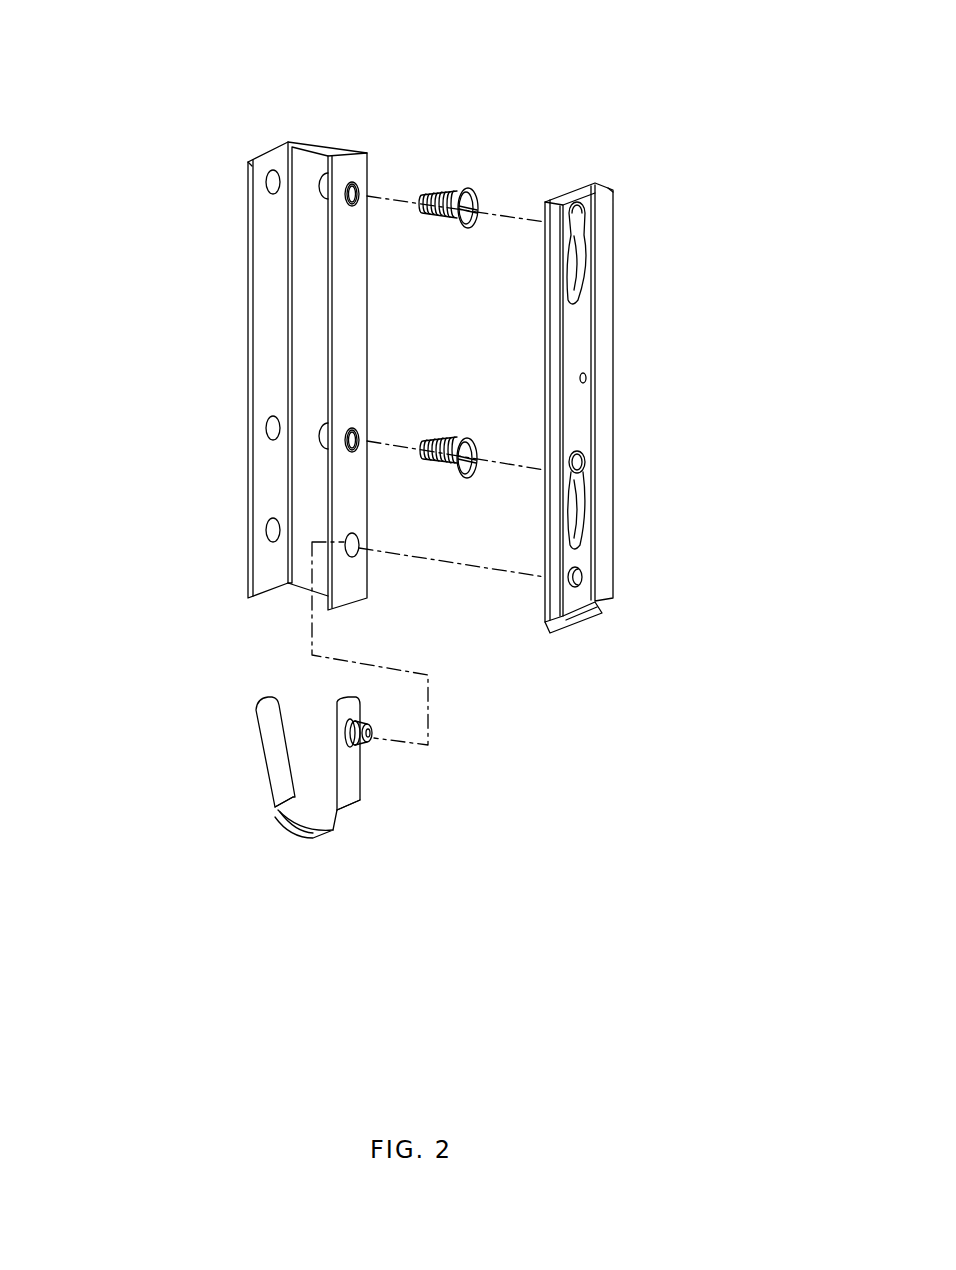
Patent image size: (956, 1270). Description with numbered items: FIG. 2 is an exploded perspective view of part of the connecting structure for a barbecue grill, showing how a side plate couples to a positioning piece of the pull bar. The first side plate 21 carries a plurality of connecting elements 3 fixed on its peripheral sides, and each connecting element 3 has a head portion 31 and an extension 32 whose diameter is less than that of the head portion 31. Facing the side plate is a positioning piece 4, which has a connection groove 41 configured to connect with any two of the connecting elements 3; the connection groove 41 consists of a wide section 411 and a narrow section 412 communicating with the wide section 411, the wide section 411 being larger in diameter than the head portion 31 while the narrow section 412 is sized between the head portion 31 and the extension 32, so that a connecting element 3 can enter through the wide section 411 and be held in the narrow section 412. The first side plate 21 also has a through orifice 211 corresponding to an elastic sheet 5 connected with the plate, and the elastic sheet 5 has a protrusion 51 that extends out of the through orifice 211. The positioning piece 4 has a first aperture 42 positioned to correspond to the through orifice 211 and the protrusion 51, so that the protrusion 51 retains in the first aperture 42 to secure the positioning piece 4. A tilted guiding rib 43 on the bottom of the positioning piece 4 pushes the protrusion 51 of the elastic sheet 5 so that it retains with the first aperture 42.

The first side plate 21 is at (248, 265).
The through orifice 211 is at (359, 548).
The connecting element 3 is at (465, 240).
The head portion 31 is at (480, 190).
The extension 32 is at (445, 198).
The positioning piece 4 is at (713, 469).
The connection groove 41 is at (724, 509).
The wide section 411 is at (582, 518).
The narrow section 412 is at (582, 458).
The first aperture 42 is at (573, 575).
The tilted guiding rib 43 is at (583, 625).
The elastic sheet 5 is at (304, 776).
The protrusion 51 is at (373, 740).